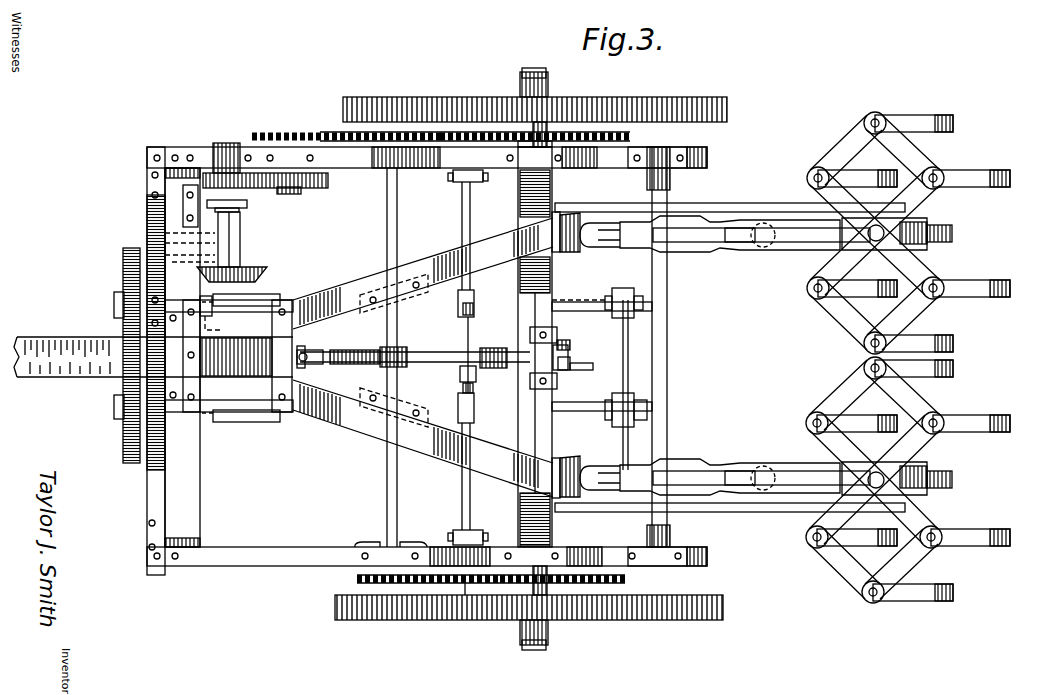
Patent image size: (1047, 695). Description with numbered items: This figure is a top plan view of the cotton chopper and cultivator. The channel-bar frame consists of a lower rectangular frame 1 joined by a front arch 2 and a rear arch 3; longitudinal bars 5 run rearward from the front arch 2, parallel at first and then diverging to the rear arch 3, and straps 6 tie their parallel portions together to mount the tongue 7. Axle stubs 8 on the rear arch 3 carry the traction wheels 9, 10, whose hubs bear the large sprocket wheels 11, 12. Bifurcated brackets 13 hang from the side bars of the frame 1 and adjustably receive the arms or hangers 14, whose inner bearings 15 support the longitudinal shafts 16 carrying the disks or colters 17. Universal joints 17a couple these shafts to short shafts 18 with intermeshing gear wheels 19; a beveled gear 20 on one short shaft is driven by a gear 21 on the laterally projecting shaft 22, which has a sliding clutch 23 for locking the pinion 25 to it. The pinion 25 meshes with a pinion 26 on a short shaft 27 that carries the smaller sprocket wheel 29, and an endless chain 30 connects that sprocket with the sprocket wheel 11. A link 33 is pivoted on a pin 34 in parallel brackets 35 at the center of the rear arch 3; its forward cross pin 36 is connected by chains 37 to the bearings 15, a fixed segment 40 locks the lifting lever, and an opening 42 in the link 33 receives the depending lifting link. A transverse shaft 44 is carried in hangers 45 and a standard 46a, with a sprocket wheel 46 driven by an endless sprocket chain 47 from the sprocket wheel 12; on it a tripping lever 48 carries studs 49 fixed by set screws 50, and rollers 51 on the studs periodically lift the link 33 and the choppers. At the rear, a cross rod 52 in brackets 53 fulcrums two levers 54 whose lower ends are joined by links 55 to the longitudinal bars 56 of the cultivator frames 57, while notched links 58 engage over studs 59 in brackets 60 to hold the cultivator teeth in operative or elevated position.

The lower rectangular frame 1 is at (268, 566).
The front arch 2 is at (192, 487).
The rear arch 3 is at (552, 432).
The longitudinal bars 5 is at (335, 292).
The straps 6 is at (183, 350).
The tongue 7 is at (45, 342).
The axle stubs 8 is at (520, 86).
The traction wheel 9 is at (668, 97).
The traction wheel 10 is at (628, 620).
The large sprocket wheel 11 is at (630, 135).
The large sprocket wheel 12 is at (625, 579).
The bifurcated brackets 13 is at (480, 182).
The arms or hangers 14 is at (462, 232).
The bearings 15 is at (474, 304).
The longitudinal shafts 16 is at (562, 302).
The disks or colters 17 is at (618, 340).
The universal joints 17a is at (265, 296).
The short shafts 18 is at (114, 300).
The intermeshing gear wheels 19 is at (128, 246).
The beveled gear 20 is at (198, 262).
The gear 21 is at (262, 268).
The laterally projecting shaft 22 is at (240, 228).
The sliding clutch 23 is at (247, 204).
The pinion 25 is at (215, 150).
The pinion 26 is at (328, 180).
The short shaft 27 is at (300, 193).
The smaller sprocket wheel 29 is at (255, 132).
The endless chain 30 is at (340, 133).
The link 33 is at (495, 348).
The pin 34 is at (560, 340).
The parallel brackets 35 is at (534, 327).
The cross pin 36 is at (473, 312).
The chains 37 is at (462, 390).
The fixed segment 40 is at (588, 366).
The opening 42 is at (470, 385).
The transverse shaft 44 is at (387, 490).
The hangers 45 is at (395, 275).
The sprocket wheel 46 is at (357, 579).
The standard 46a is at (360, 546).
The endless sprocket chain 47 is at (463, 598).
The tripping lever 48 is at (412, 352).
The studs 49 is at (320, 352).
The set screws 50 is at (358, 350).
The rollers 51 is at (308, 362).
The cross rod 52 is at (668, 420).
The brackets 53 is at (672, 175).
The levers 54 is at (606, 226).
The links 55 is at (735, 250).
The longitudinal bars 56 is at (773, 250).
The cultivator frames 57 is at (935, 272).
The notched links 58 is at (745, 203).
The studs 59 is at (553, 214).
The brackets 60 is at (568, 215).